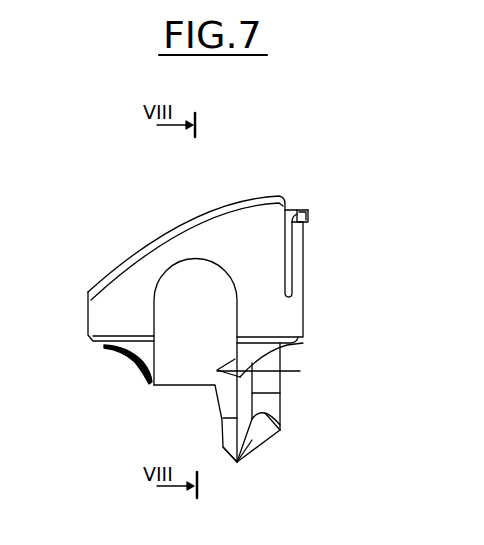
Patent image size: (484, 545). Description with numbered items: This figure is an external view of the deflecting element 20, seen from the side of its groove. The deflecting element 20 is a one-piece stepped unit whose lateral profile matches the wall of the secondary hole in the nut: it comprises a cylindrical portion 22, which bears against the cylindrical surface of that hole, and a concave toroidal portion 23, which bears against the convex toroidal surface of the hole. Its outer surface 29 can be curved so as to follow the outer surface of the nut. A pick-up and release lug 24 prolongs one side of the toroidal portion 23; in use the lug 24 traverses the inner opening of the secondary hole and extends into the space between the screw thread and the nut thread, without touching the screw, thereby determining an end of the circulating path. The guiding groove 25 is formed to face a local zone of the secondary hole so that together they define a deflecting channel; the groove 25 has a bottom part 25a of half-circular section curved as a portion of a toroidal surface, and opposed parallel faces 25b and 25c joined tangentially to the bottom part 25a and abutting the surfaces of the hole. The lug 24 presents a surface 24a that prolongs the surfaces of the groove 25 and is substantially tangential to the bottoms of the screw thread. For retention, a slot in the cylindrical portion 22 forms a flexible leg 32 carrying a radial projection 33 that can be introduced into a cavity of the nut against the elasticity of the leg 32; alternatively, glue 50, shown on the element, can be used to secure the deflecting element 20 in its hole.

The deflecting element 20 is at (62, 290).
The cylindrical portion 22 is at (121, 302).
The concave toroidal portion 23 is at (130, 357).
The pick-up and release lug 24 is at (252, 437).
The surface of the lug 24a is at (226, 443).
The guiding groove 25 is at (195, 358).
The bottom part 25a is at (190, 308).
The face 25b is at (158, 385).
The face 25c is at (300, 371).
The outer surface 29 is at (173, 228).
The flexible leg 32 is at (297, 265).
The radial projection 33 is at (310, 213).
The glue 50 is at (104, 346).